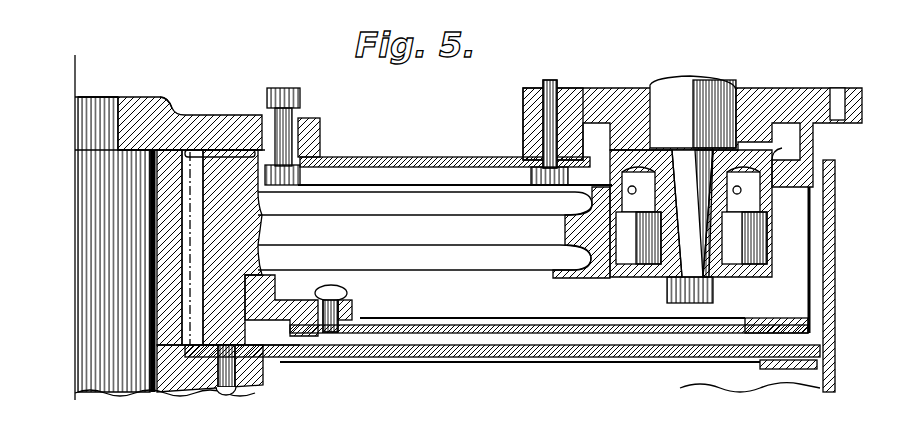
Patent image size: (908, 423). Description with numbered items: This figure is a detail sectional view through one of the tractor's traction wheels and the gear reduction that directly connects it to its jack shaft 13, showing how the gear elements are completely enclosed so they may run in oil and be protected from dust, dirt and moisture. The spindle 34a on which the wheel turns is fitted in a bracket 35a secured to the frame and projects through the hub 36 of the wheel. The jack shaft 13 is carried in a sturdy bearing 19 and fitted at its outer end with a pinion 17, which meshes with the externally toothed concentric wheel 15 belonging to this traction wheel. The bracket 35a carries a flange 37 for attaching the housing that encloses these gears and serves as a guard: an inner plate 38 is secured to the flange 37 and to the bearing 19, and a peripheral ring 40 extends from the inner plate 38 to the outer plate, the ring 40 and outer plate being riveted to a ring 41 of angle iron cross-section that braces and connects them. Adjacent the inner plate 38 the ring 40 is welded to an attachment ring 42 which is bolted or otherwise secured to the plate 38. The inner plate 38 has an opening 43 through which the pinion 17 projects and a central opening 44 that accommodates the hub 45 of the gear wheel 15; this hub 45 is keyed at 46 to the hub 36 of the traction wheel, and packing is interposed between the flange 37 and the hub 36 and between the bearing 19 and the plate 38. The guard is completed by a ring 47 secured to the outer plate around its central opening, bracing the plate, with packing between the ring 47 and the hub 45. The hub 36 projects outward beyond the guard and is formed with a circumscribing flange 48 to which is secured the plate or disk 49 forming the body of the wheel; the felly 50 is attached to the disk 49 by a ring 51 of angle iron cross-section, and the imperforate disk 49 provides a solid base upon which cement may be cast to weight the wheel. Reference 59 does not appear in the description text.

The jack shaft 13 is at (688, 100).
The externally toothed concentric wheel 15 is at (436, 268).
The pinion 17 is at (660, 268).
The bearing 19 is at (574, 95).
The spindle 34a is at (92, 145).
The bracket 35a is at (184, 78).
The hub 36 is at (172, 385).
The flange 37 is at (200, 130).
The inner plate 38 is at (424, 160).
The peripheral ring 40 is at (822, 240).
The ring of angle iron cross-section 41 is at (760, 318).
The attachment ring 42 is at (802, 160).
The opening 43 is at (592, 160).
The central opening 44 is at (272, 150).
The hub of the gear wheel 45 is at (235, 248).
The key 46 is at (190, 262).
The ring 47 is at (310, 318).
The circumscribing flange 48 is at (256, 375).
The plate or disk 49 is at (390, 357).
The felly 50 is at (812, 320).
The ring of angle iron cross-section 51 is at (786, 370).
The upper plate 59 is at (490, 333).